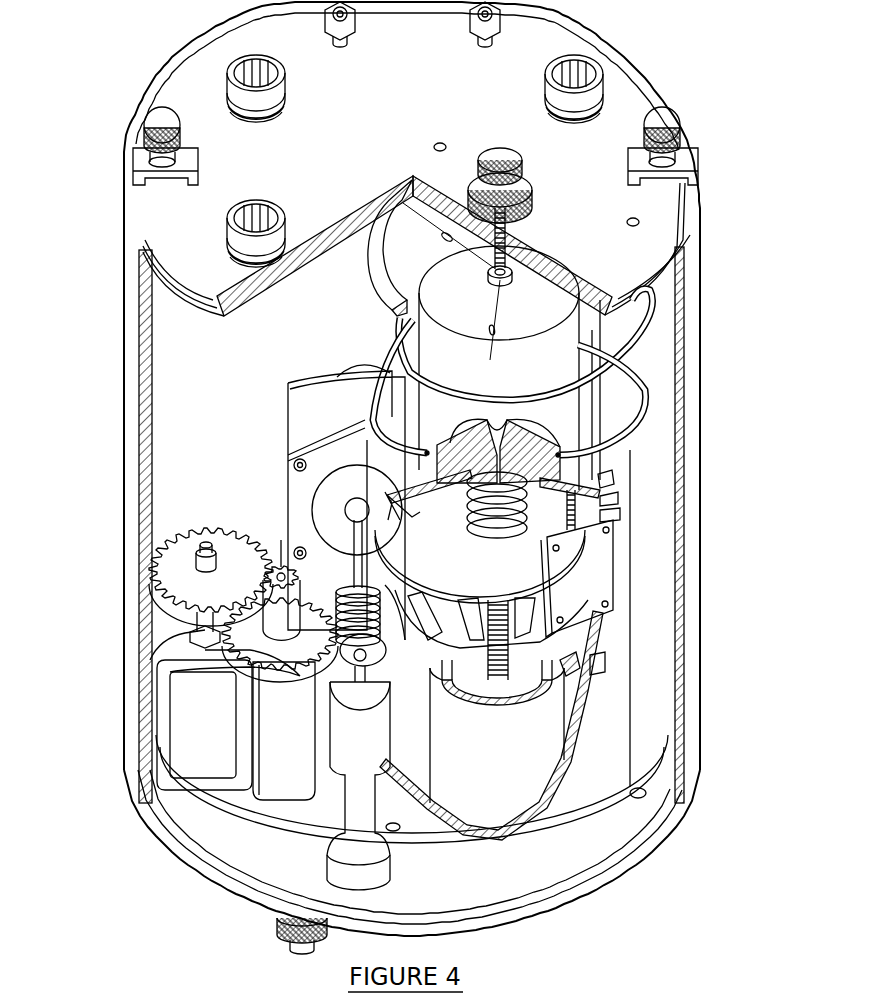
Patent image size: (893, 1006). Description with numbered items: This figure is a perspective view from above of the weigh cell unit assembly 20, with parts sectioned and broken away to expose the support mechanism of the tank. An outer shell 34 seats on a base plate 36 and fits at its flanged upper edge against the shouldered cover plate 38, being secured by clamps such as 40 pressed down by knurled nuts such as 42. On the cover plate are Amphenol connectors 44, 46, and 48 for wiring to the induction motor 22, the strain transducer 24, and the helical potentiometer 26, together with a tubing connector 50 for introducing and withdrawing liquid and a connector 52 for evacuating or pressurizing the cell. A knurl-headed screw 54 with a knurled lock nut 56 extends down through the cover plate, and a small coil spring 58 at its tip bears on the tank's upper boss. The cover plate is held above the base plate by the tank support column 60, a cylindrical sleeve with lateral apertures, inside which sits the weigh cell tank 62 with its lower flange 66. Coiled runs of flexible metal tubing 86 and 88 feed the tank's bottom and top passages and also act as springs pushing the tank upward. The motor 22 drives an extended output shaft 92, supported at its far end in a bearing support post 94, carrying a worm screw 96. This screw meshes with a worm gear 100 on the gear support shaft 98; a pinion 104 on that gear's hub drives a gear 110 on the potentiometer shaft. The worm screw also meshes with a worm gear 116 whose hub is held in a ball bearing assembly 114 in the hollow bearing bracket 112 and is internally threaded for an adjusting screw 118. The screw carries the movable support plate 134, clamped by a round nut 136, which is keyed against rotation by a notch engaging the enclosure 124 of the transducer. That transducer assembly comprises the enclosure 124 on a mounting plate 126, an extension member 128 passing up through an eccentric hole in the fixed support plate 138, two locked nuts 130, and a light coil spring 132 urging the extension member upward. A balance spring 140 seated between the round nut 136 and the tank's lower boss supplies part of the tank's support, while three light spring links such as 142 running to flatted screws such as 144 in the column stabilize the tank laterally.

The weigh cell unit assembly 20 is at (102, 643).
The induction motor 22 is at (338, 372).
The strain transducer 24 is at (626, 598).
The helical potentiometer 26 is at (184, 733).
The outer shell 34 is at (124, 442).
The base plate 36 is at (630, 873).
The cover plate 38 is at (397, 139).
The clamp 40 is at (198, 170).
The knurled nut 42 is at (188, 130).
The Amphenol connector 44 is at (287, 80).
The Amphenol connector 46 is at (545, 80).
The Amphenol connector 48 is at (280, 205).
The tubing connector 50 is at (356, 24).
The connector 52 is at (470, 22).
The knurl-headed screw 54 is at (505, 150).
The knurled lock nut 56 is at (533, 194).
The coil spring 58 is at (512, 279).
The tank support column 60 is at (634, 687).
The weigh cell tank 62 is at (499, 380).
The lower flange 66 is at (612, 478).
The flexible metal tubing 86 is at (635, 364).
The flexible metal tubing 88 is at (635, 330).
The output shaft 92 is at (354, 562).
The bearing support post 94 is at (340, 798).
The worm screw 96 is at (352, 656).
The gear support shaft 98 is at (265, 755).
The worm gear 100 is at (303, 624).
The pinion 104 is at (275, 566).
The gear 110 is at (181, 601).
The bearing bracket 112 is at (436, 752).
The ball bearing assembly 114 is at (490, 697).
The worm gear 116 is at (573, 673).
The adjusting screw 118 is at (507, 690).
The enclosure 124 is at (538, 554).
The mounting plate 126 is at (617, 562).
The extension member 128 is at (620, 516).
The nuts 130 is at (618, 498).
The coil spring 132 is at (567, 512).
The movable support plate 134 is at (428, 570).
The round nut 136 is at (478, 540).
The fixed support plate 138 is at (396, 522).
The balance spring 140 is at (462, 497).
The spring link 142 is at (471, 262).
The screw 144 is at (399, 190).